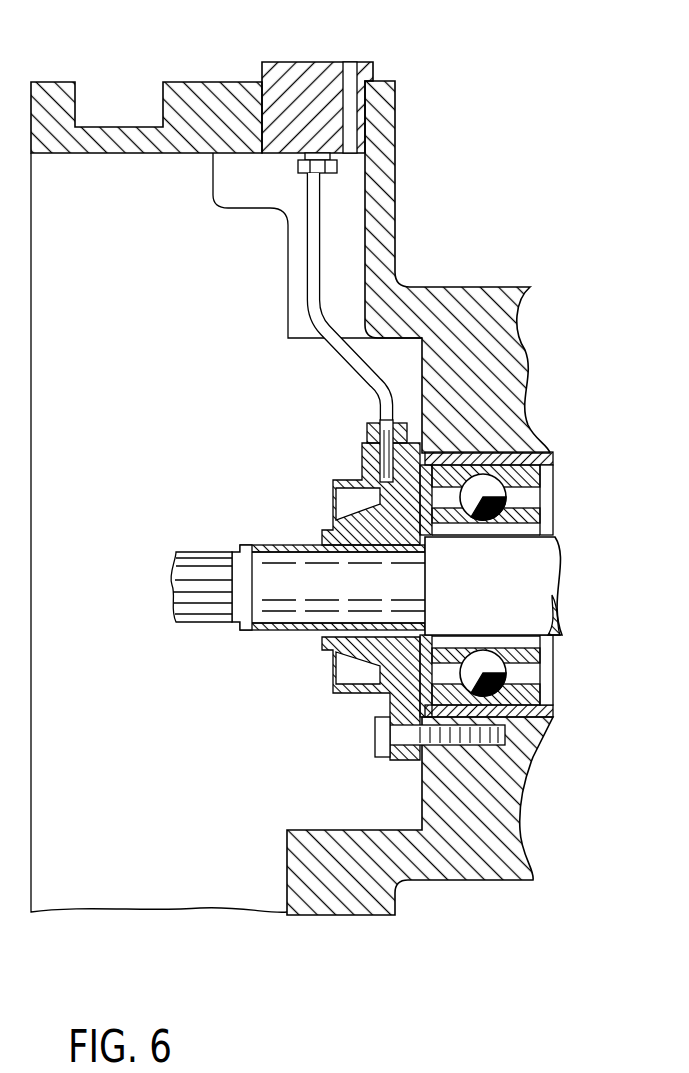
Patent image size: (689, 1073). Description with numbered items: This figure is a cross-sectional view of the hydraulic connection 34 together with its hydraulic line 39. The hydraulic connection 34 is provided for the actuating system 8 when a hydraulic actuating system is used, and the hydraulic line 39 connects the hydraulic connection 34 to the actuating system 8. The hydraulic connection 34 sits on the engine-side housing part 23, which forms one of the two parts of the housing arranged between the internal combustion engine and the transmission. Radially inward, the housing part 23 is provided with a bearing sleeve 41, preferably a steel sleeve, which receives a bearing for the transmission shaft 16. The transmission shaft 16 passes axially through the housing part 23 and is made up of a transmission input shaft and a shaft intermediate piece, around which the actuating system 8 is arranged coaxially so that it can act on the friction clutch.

The actuating system 8 is at (535, 520).
The transmission shaft 16 is at (290, 598).
The housing part 23 is at (117, 143).
The hydraulic connection 34 is at (322, 96).
The hydraulic line 39 is at (315, 263).
The bearing sleeve 41 is at (557, 452).